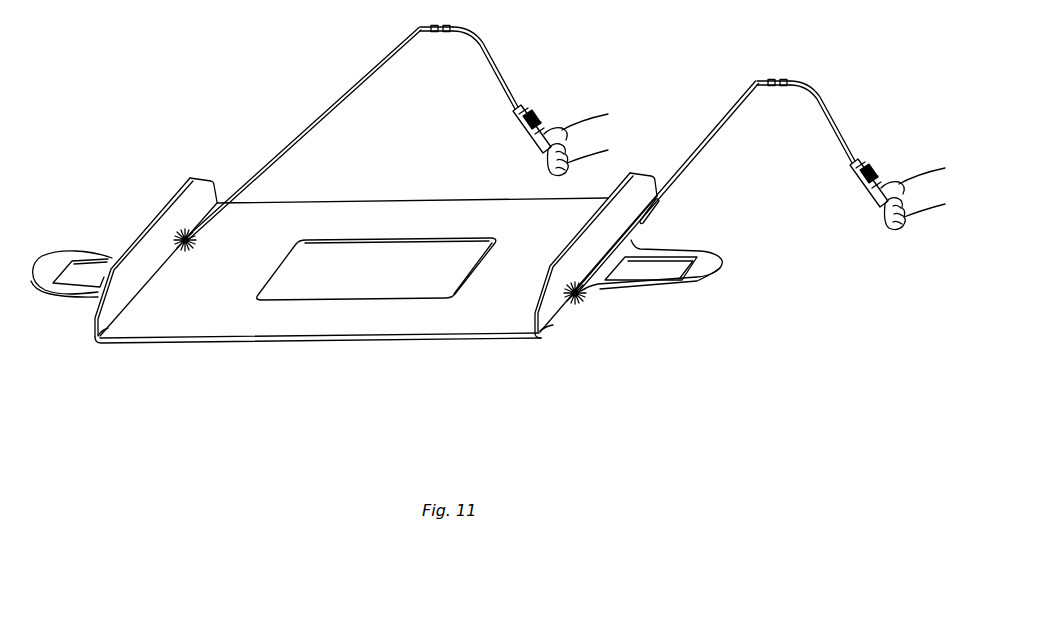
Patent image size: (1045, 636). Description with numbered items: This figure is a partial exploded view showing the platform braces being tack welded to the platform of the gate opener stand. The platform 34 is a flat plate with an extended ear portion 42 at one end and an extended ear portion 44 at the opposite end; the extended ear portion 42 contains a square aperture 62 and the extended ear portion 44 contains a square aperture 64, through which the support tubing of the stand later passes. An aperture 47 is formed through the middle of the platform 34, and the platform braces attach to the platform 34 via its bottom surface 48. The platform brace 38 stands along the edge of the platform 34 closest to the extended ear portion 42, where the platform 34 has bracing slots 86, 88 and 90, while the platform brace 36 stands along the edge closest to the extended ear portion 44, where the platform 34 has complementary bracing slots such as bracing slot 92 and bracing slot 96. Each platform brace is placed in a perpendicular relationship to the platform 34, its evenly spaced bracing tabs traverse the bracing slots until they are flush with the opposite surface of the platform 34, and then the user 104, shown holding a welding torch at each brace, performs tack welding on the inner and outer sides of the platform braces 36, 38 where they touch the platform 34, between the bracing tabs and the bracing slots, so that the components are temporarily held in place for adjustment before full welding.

The platform 34 is at (253, 341).
The platform brace 36 is at (613, 249).
The platform brace 38 is at (168, 255).
The extended ear portion 42 is at (71, 273).
The extended ear portion 44 is at (672, 287).
The aperture 47 is at (408, 288).
The bottom surface 48 is at (376, 308).
The aperture 62 is at (82, 275).
The aperture 64 is at (647, 273).
The bracing slot 86 is at (110, 331).
The bracing slot 88 is at (159, 271).
The bracing slot 90 is at (218, 205).
The bracing slot 92 is at (563, 323).
The bracing slot 96 is at (650, 216).
The user 104 is at (565, 130).